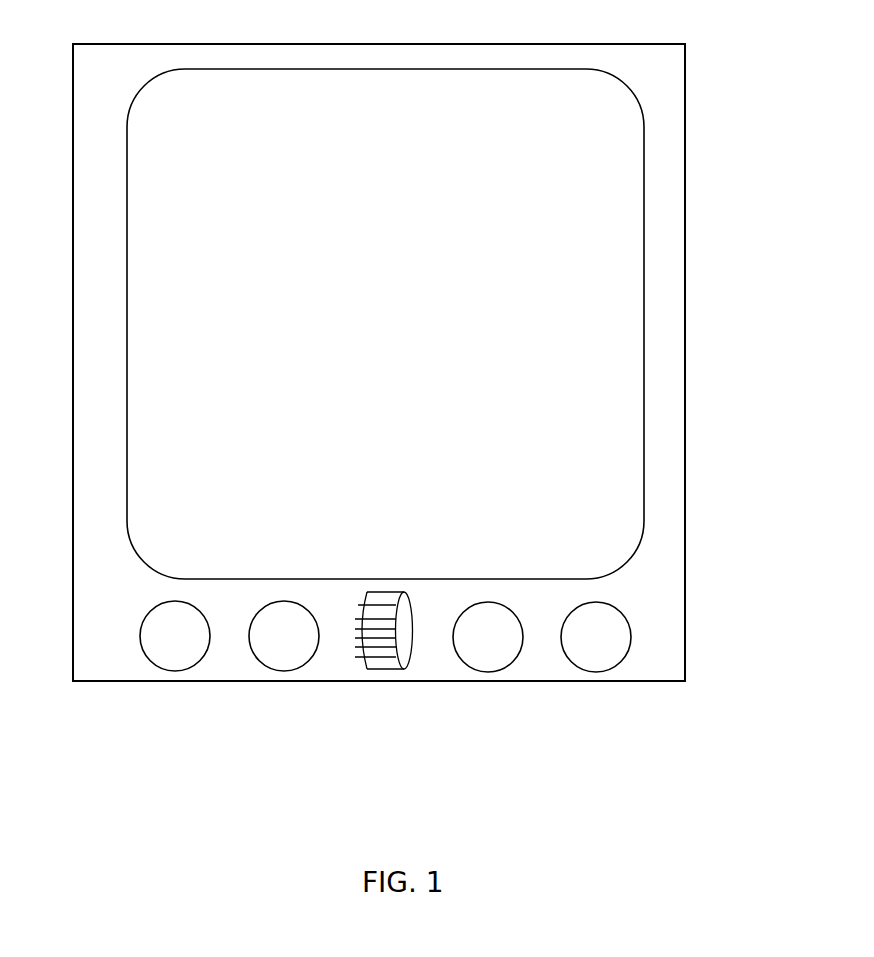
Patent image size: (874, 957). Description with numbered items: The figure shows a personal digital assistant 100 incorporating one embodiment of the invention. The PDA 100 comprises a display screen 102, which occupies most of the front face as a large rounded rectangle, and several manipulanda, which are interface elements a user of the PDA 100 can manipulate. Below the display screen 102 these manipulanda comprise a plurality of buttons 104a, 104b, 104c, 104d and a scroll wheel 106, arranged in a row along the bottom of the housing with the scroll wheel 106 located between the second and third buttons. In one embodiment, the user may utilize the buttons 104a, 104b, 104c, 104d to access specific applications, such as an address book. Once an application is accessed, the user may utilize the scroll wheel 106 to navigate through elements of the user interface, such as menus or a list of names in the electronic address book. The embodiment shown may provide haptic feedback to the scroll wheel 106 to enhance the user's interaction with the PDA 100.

The personal digital assistant 100 is at (688, 120).
The display screen 102 is at (644, 325).
The button 104a is at (173, 671).
The button 104b is at (282, 671).
The button 104c is at (482, 672).
The button 104d is at (593, 672).
The scroll wheel 106 is at (363, 669).